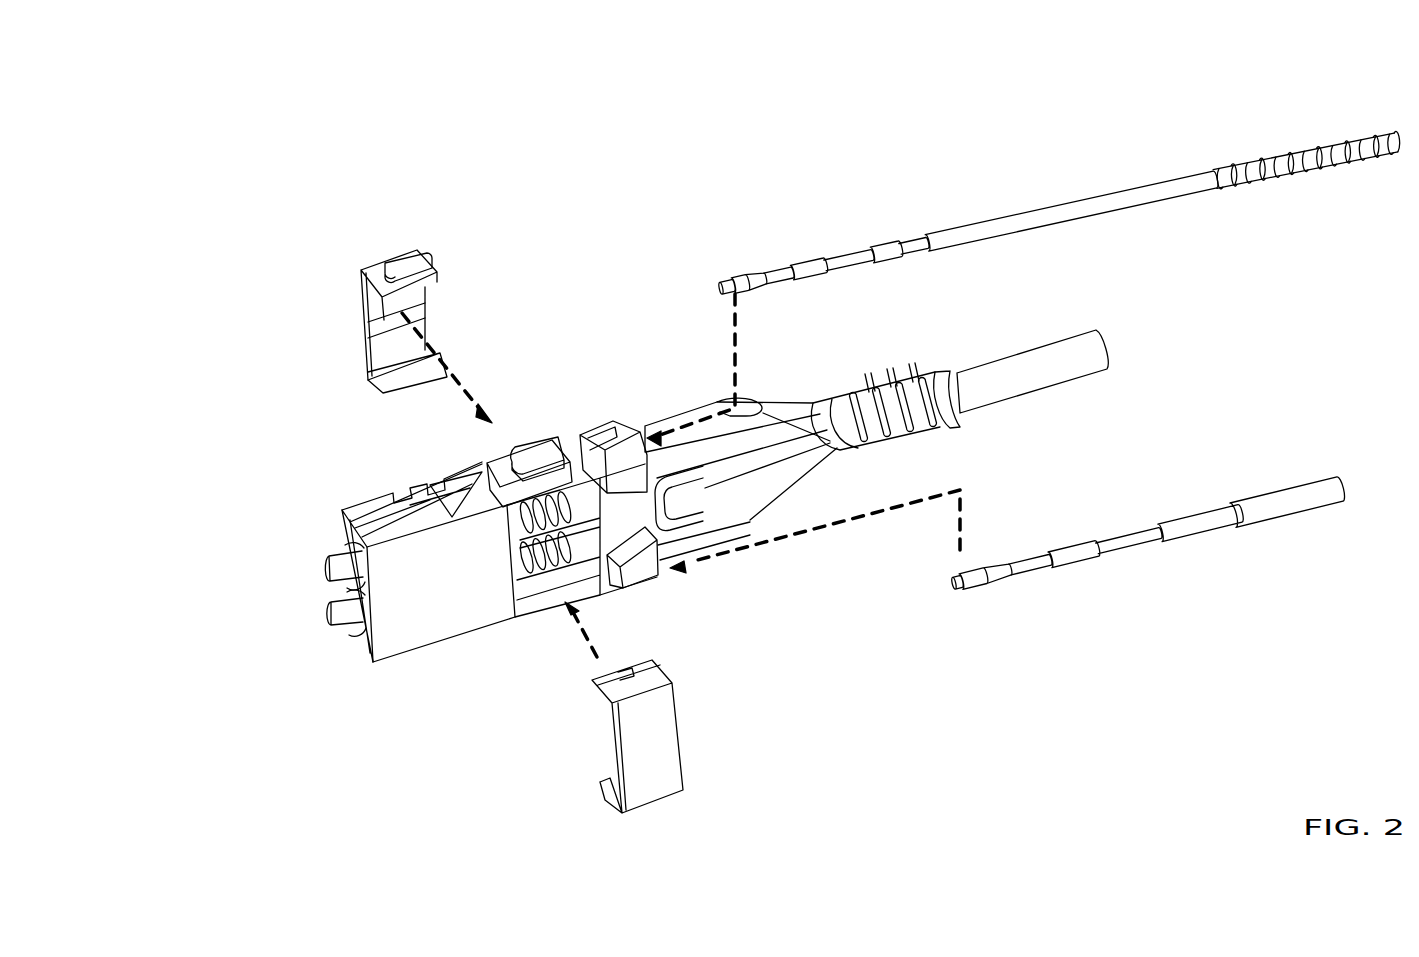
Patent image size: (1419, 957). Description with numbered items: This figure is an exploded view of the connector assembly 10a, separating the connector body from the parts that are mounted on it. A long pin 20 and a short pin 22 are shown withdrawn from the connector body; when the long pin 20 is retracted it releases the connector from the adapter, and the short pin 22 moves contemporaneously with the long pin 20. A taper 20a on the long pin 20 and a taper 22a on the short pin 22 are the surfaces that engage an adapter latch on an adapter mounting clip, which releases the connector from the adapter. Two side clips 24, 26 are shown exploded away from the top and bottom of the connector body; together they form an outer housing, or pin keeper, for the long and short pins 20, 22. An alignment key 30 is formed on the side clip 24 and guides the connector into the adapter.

The connector assembly 10a is at (295, 703).
The long pin 20 is at (935, 178).
The taper on the long pin 20a is at (712, 272).
The short pin 22 is at (1226, 637).
The taper on the short pin 22a is at (978, 612).
The side clip 24 is at (325, 316).
The side clip 26 is at (655, 730).
The alignment key 30 is at (414, 256).